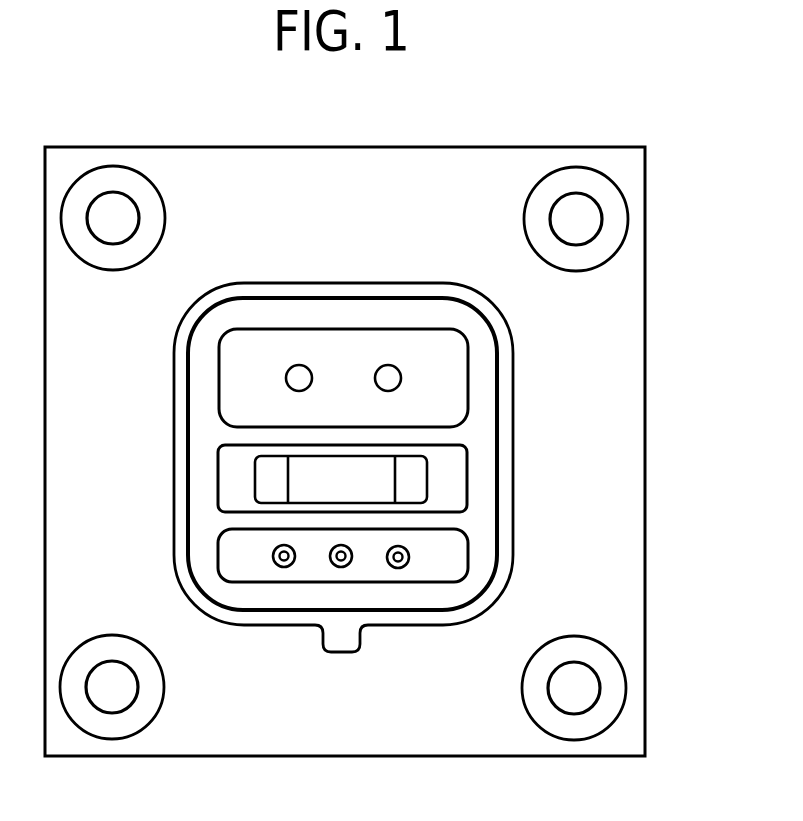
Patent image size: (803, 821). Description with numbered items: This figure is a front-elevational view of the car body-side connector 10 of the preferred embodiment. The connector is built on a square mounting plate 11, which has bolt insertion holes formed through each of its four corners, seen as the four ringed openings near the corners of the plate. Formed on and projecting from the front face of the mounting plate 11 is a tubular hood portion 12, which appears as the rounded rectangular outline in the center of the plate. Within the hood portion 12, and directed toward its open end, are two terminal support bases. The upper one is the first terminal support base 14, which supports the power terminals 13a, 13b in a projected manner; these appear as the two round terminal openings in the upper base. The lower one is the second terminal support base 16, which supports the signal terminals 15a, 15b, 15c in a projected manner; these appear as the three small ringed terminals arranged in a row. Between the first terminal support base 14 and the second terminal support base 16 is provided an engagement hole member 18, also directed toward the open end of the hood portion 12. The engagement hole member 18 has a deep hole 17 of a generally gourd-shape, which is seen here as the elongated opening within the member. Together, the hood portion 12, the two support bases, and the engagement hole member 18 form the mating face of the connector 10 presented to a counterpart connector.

The car body-side connector 10 is at (266, 148).
The mounting plate 11 is at (450, 160).
The hood portion 12 is at (503, 372).
The power terminal 13a is at (299, 365).
The power terminal 13b is at (388, 365).
The first terminal support base 14 is at (241, 368).
The signal terminal 15a is at (284, 567).
The signal terminal 15b is at (341, 567).
The signal terminal 15c is at (398, 568).
The second terminal support base 16 is at (448, 560).
The deep hole 17 is at (382, 488).
The engagement hole member 18 is at (457, 455).